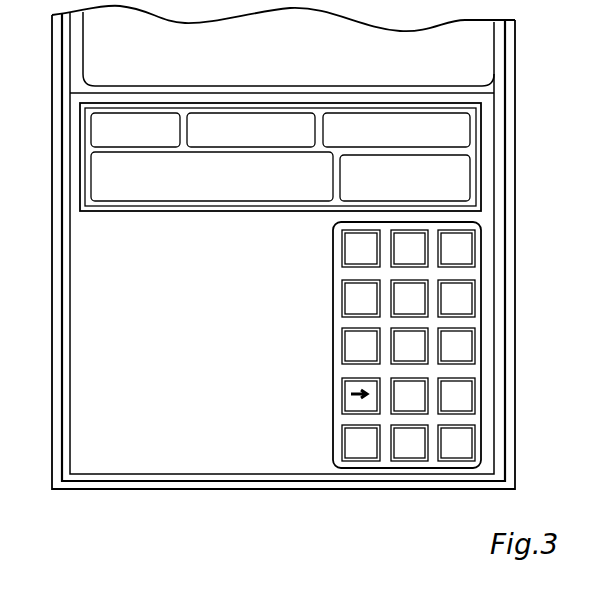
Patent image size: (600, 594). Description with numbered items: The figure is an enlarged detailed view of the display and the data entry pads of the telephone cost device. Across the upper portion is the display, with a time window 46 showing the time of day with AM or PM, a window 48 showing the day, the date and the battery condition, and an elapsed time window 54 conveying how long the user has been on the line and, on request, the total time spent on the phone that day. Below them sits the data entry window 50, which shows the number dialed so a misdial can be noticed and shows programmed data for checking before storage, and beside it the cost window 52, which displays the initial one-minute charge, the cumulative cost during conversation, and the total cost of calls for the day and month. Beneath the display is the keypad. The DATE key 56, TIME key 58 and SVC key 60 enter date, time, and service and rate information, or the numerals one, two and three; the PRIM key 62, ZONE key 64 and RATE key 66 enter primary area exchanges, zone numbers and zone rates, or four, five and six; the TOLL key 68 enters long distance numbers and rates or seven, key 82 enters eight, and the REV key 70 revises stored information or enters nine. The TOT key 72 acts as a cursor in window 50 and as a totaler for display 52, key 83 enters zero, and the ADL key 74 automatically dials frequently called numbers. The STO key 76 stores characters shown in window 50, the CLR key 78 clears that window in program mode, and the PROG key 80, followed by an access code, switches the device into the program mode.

The time window 46 is at (163, 126).
The day date battery window 48 is at (312, 126).
The elapsed time window 54 is at (449, 128).
The data entry window 50 is at (101, 186).
The cost display window 52 is at (458, 172).
The DATE key 56 is at (352, 247).
The TIME key 58 is at (393, 258).
The SVC key 60 is at (467, 251).
The PRIM key 62 is at (352, 298).
The ZONE key 64 is at (393, 308).
The RATE key 66 is at (467, 298).
The TOLL key 68 is at (352, 346).
The numeral eight key 82 is at (413, 360).
The REV key 70 is at (467, 343).
The TOT key 72 is at (352, 392).
The numeral zero key 83 is at (410, 408).
The ADL key 74 is at (467, 388).
The STO key 76 is at (352, 440).
The CLR key 78 is at (412, 453).
The PROG key 80 is at (467, 437).